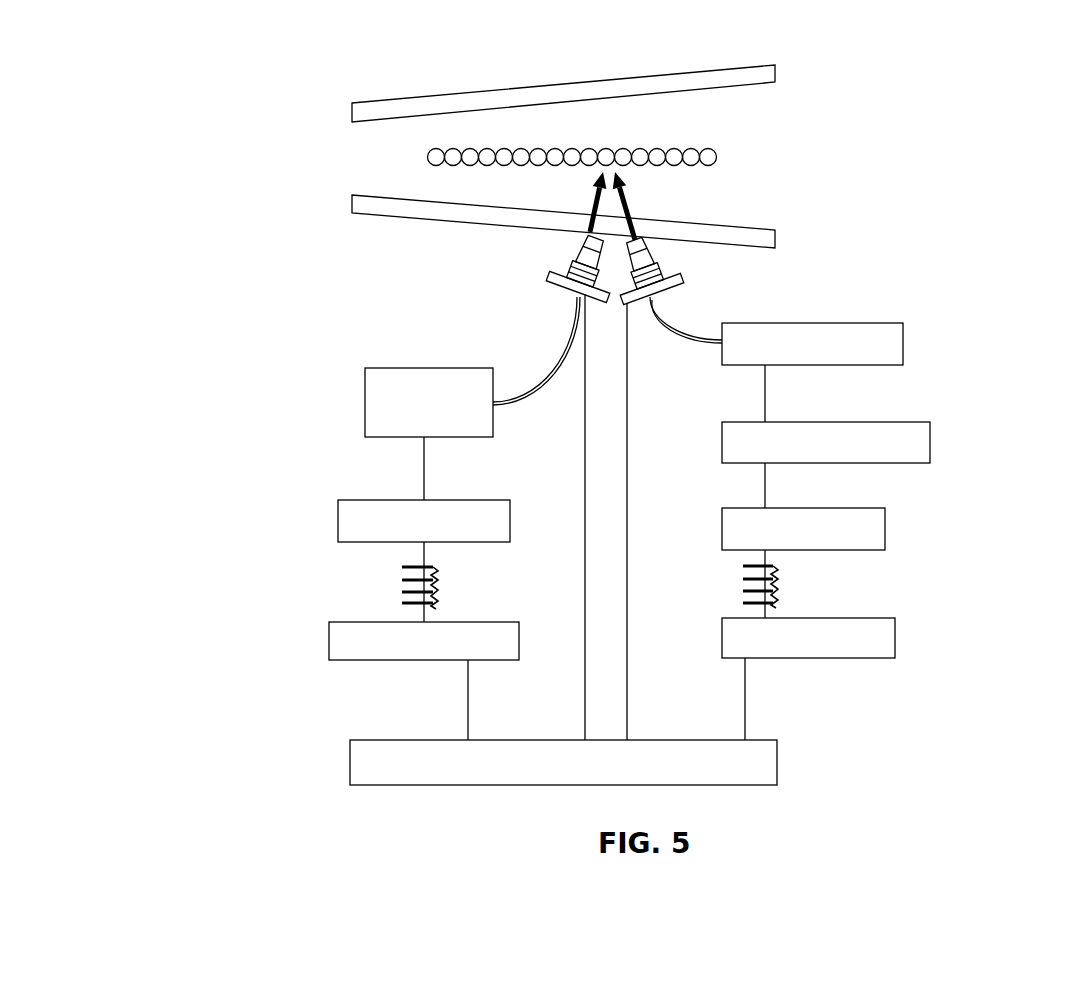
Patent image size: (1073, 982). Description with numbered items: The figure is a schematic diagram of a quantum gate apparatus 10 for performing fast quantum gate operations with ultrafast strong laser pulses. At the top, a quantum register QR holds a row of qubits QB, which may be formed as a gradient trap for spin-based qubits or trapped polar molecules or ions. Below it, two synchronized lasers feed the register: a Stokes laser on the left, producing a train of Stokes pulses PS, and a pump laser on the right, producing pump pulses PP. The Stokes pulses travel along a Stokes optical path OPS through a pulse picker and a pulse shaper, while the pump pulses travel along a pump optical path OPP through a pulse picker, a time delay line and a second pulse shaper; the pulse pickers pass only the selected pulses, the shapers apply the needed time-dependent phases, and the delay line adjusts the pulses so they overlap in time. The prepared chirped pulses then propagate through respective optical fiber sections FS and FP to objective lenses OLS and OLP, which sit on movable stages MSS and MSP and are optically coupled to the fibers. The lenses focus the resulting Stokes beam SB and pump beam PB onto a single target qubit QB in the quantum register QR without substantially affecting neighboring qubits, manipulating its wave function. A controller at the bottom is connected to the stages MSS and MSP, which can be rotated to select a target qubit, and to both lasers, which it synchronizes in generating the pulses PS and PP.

The quantum gate apparatus 10 is at (235, 55).
The quantum register QR is at (348, 74).
The qubit QB is at (729, 156).
The Stokes beam SB is at (590, 199).
The pump beam PB is at (625, 203).
The Stokes objective lens OLS is at (577, 248).
The pump objective lens OLP is at (663, 253).
The Stokes movable stage MSS is at (548, 283).
The pump movable stage MSP is at (680, 275).
The Stokes optical fiber section FS is at (549, 363).
The pump optical fiber section FP is at (688, 338).
The Stokes optical path OPS is at (285, 238).
The pump optical path OPP is at (925, 270).
The Stokes pulses PS is at (385, 585).
The pump pulses PP is at (797, 585).